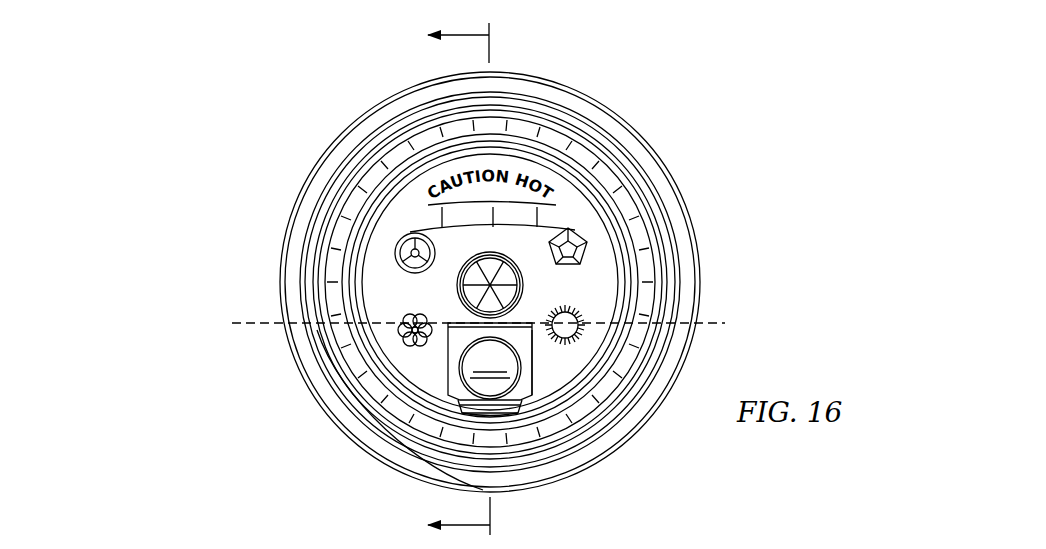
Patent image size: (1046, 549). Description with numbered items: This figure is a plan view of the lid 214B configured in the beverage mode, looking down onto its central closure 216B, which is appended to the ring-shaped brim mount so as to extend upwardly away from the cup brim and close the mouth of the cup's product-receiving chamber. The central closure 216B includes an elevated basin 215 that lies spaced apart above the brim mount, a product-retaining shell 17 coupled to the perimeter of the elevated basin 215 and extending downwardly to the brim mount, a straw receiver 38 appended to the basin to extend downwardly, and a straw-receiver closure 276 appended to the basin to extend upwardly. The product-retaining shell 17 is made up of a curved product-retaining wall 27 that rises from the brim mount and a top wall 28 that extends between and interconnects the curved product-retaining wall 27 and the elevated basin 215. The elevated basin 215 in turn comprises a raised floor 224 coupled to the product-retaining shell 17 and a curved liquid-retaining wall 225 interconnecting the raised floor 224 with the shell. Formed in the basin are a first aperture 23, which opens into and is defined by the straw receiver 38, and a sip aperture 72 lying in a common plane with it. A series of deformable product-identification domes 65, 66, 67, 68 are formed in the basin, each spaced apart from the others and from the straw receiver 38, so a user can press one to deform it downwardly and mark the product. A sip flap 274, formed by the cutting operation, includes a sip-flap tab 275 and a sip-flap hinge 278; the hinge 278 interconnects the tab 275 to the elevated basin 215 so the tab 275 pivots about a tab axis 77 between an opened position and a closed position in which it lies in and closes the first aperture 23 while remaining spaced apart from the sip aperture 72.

The product-retaining shell 17 is at (644, 278).
The first aperture 23 is at (490, 250).
The curved product-retaining wall 27 is at (833, 243).
The top wall 28 is at (833, 240).
The straw receiver 38 is at (470, 262).
The deformable product-identification dome 65 is at (583, 334).
The deformable product-identification dome 66 is at (585, 243).
The deformable product-identification dome 67 is at (407, 333).
The deformable product-identification dome 68 is at (413, 236).
The sip aperture 72 is at (453, 363).
The tab axis 77 is at (700, 323).
The lid 214B is at (613, 63).
The elevated basin 215 is at (665, 72).
The central closure 216B is at (843, 225).
The raised floor 224 is at (548, 235).
The curved liquid-retaining wall 225 is at (510, 158).
The sip flap 274 is at (347, 503).
The sip-flap tab 275 is at (463, 402).
The straw-receiver closure 276 is at (540, 360).
The sip-flap hinge 278 is at (473, 412).